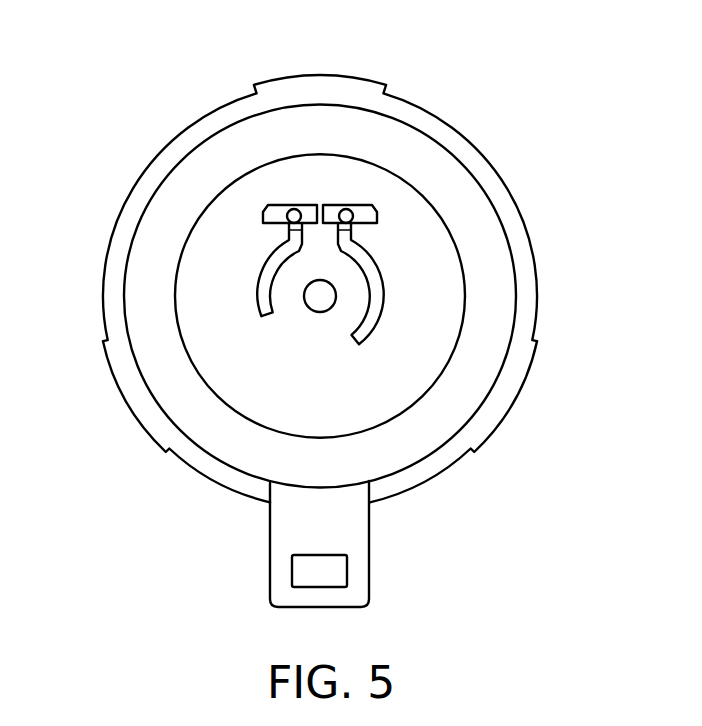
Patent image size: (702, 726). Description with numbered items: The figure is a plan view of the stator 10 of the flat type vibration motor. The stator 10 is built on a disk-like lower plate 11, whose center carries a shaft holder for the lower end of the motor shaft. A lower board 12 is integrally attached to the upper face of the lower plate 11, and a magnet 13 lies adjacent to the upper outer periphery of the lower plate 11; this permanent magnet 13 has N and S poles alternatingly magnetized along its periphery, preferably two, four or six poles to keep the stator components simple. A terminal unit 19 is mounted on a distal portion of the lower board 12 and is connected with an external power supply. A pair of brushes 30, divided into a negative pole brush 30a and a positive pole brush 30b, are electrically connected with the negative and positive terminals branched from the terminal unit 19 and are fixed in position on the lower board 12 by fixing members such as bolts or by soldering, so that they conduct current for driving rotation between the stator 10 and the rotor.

The stator 10 is at (314, 336).
The lower plate 11 is at (123, 238).
The lower board 12 is at (428, 347).
The magnet 13 is at (182, 398).
The terminal unit 19 is at (303, 573).
The brushes 30 is at (330, 205).
The negative pole brush 30a is at (272, 270).
The positive pole brush 30b is at (373, 270).